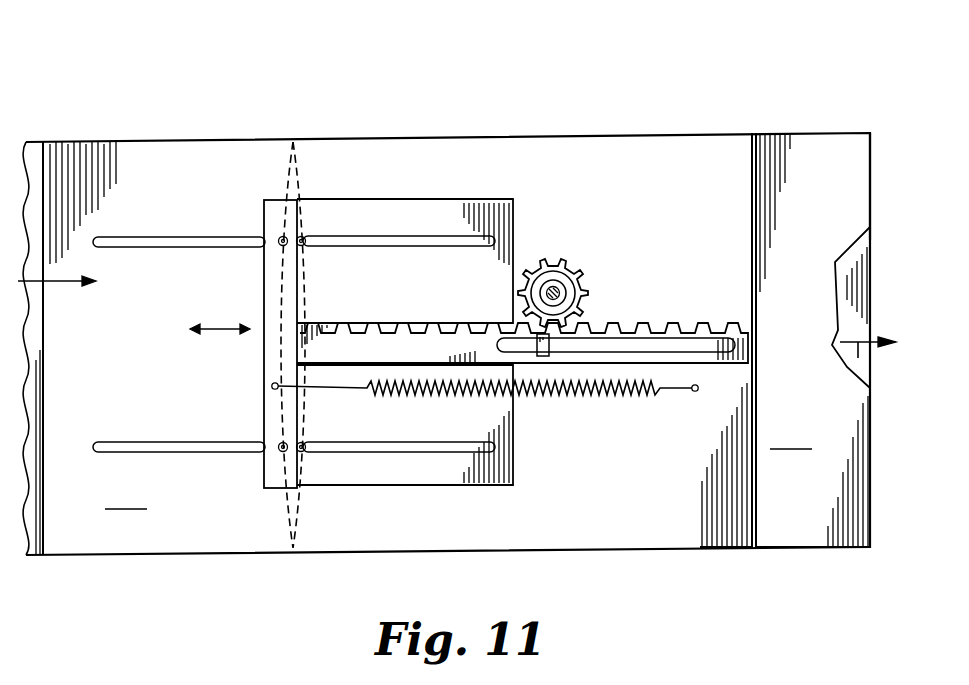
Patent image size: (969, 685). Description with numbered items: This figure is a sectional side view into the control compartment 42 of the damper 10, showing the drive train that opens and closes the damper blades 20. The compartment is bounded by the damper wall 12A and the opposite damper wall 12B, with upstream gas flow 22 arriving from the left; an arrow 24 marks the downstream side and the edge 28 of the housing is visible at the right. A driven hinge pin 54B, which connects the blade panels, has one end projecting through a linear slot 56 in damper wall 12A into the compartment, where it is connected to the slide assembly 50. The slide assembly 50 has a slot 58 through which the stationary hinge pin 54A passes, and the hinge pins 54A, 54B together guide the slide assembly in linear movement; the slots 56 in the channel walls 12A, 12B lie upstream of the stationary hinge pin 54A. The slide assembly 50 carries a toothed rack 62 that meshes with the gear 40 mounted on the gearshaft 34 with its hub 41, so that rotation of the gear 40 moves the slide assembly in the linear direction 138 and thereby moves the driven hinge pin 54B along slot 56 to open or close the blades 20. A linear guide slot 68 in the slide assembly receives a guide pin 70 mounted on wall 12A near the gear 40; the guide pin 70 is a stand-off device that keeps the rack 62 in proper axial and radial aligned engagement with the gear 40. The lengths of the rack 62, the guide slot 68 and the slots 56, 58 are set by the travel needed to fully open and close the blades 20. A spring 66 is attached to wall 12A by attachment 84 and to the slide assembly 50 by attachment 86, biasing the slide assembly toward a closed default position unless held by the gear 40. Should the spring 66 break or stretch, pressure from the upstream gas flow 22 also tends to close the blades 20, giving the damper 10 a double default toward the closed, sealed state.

The damper 10 is at (786, 98).
The damper wall 12A is at (458, 468).
The damper wall 12B is at (838, 327).
The damper blade 20 is at (303, 175).
The gas flow 22 is at (63, 283).
The direction arrow 24 is at (857, 362).
The housing edge 28 is at (870, 204).
The gearshaft 34 is at (548, 283).
The gear 40 is at (563, 288).
The gear hub 41 is at (577, 269).
The control compartment 42 is at (757, 507).
The slide assembly 50 is at (318, 221).
The stationary hinge pin 54A is at (308, 241).
The driven hinge pin 54B is at (280, 239).
The linear slot 56 is at (144, 243).
The slot 58 is at (424, 242).
The rack 62 is at (690, 323).
The spring 66 is at (596, 392).
The linear guide slot 68 is at (645, 347).
The guide pin 70 is at (545, 357).
The attachment 84 is at (692, 391).
The attachment 86 is at (271, 386).
The direction 138 is at (218, 328).